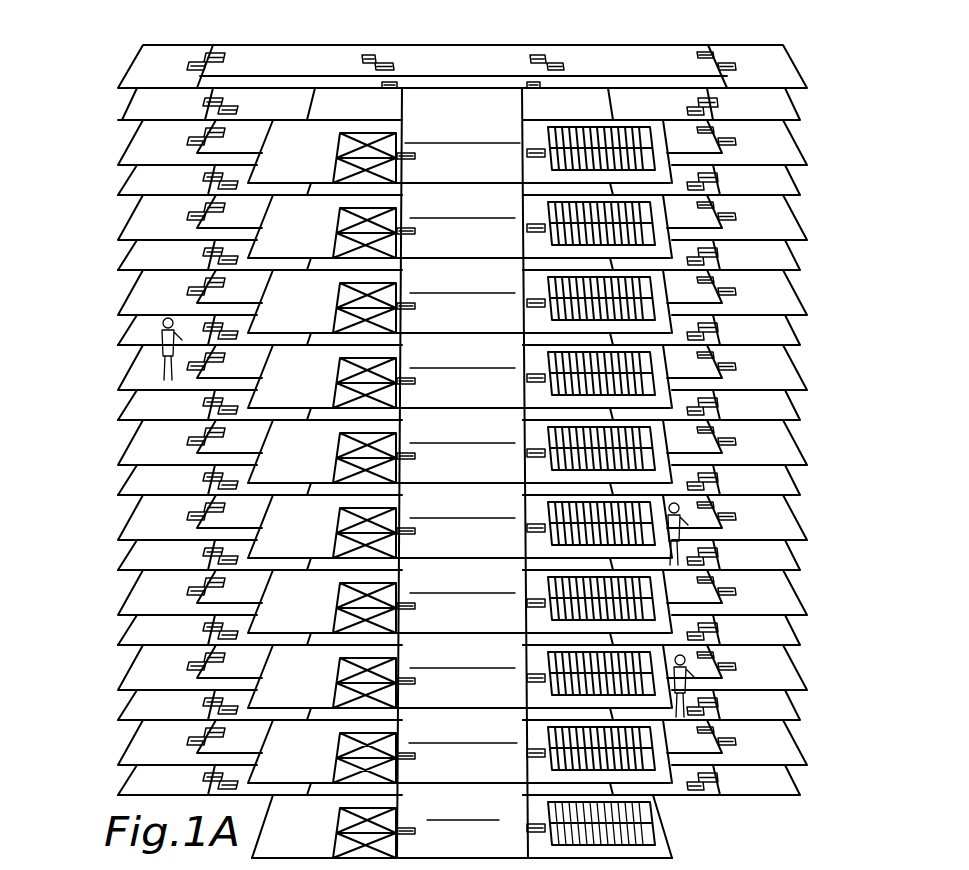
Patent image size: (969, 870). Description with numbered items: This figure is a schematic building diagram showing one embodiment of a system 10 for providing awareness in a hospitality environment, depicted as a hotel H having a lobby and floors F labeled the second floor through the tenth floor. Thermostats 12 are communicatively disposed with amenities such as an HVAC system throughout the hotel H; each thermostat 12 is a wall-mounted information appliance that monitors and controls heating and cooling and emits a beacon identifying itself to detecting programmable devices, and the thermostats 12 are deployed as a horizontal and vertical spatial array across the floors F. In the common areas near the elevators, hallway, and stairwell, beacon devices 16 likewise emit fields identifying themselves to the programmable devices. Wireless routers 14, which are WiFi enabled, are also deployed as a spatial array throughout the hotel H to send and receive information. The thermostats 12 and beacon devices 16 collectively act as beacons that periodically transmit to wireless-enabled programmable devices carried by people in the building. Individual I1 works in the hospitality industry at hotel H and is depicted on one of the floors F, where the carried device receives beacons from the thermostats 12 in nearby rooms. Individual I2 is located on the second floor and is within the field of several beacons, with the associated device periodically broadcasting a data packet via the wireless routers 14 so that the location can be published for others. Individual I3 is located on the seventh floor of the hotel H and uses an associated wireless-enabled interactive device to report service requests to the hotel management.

The system for providing awareness in a hospitality environment 10 is at (106, 58).
The thermostat 12 is at (530, 58).
The wireless router 14 is at (397, 86).
The beacon device 16 is at (471, 497).
The individual I1 is at (690, 562).
The individual I2 is at (696, 712).
The individual I3 is at (157, 362).
The hotel H is at (662, 809).
The floors F is at (534, 864).